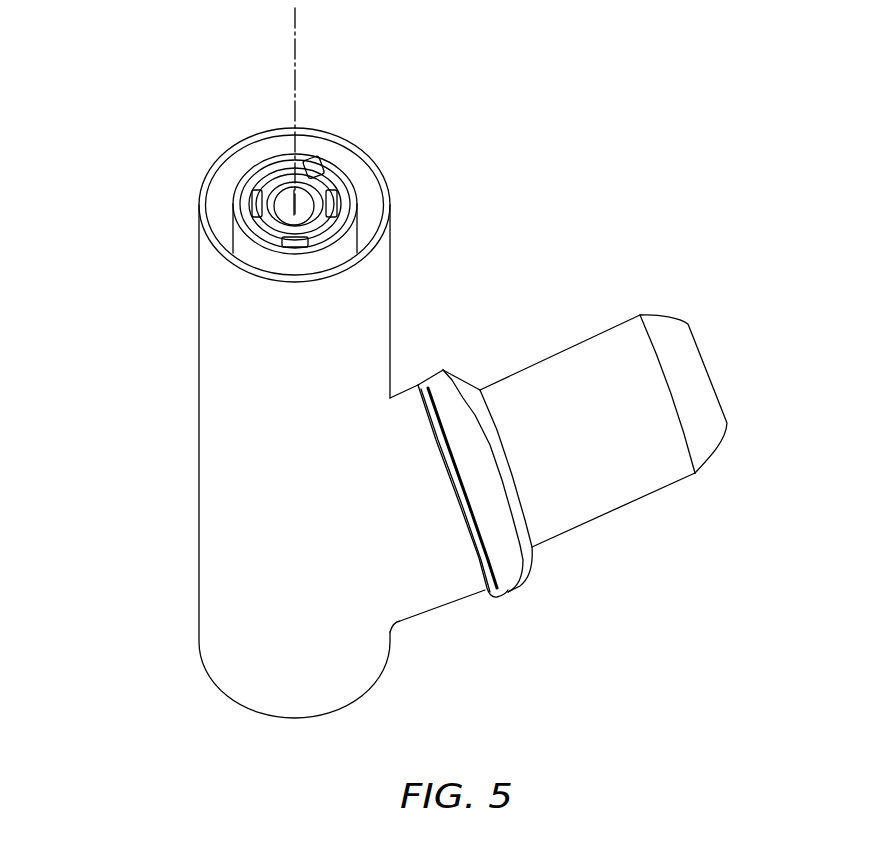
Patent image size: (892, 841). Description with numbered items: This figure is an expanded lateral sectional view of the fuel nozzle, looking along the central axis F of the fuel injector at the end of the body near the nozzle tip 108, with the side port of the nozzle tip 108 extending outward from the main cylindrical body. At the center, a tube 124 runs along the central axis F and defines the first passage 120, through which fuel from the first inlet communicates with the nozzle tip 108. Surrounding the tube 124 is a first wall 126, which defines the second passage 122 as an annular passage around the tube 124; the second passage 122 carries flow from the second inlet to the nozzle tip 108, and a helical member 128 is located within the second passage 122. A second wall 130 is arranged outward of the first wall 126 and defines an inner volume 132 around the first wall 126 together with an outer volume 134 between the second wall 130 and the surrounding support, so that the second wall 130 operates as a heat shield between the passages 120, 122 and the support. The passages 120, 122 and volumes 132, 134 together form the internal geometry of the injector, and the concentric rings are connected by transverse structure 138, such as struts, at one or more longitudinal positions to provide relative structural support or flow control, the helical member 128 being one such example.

The nozzle tip 108 is at (606, 276).
The first passage 120 is at (311, 168).
The second passage 122 is at (352, 167).
The tube 124 is at (320, 160).
The first wall 126 is at (340, 178).
The helical member 128 is at (262, 172).
The second wall 130 is at (355, 195).
The inner volume 132 is at (345, 209).
The outer volume 134 is at (360, 240).
The transverse structure 138 is at (245, 207).
The central axis F is at (295, 45).